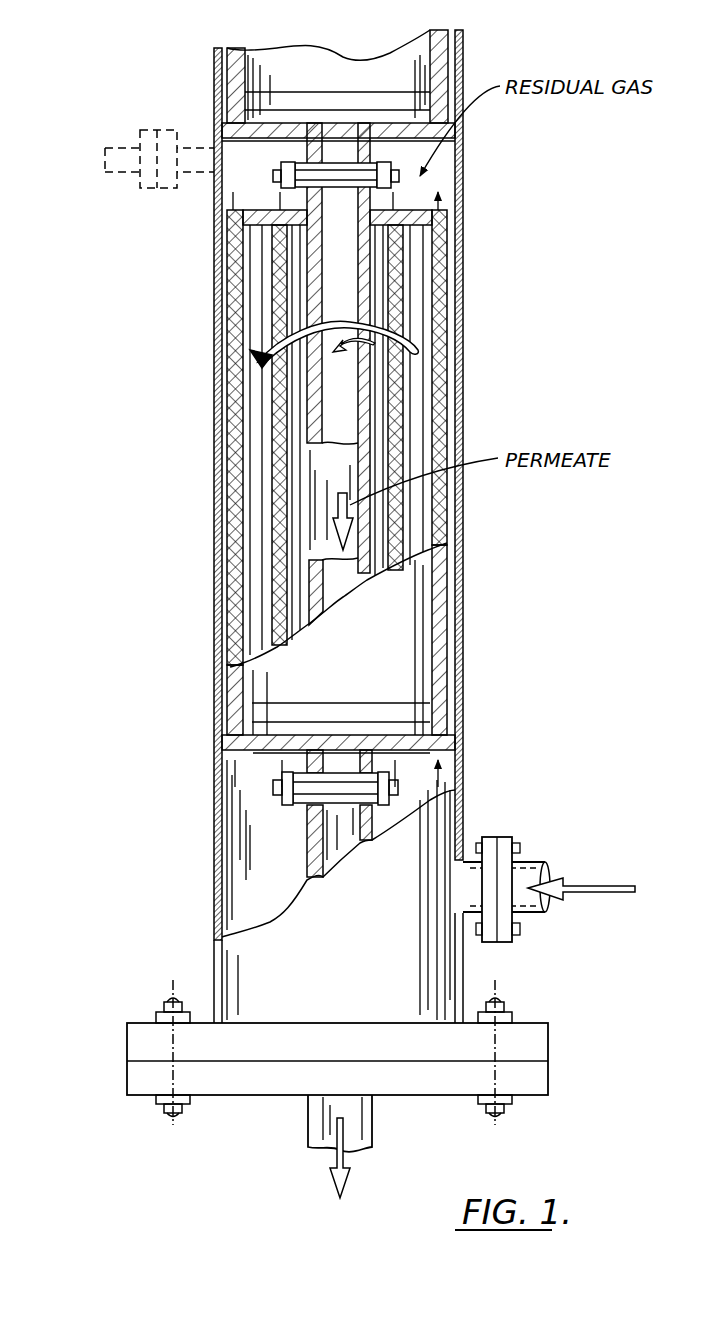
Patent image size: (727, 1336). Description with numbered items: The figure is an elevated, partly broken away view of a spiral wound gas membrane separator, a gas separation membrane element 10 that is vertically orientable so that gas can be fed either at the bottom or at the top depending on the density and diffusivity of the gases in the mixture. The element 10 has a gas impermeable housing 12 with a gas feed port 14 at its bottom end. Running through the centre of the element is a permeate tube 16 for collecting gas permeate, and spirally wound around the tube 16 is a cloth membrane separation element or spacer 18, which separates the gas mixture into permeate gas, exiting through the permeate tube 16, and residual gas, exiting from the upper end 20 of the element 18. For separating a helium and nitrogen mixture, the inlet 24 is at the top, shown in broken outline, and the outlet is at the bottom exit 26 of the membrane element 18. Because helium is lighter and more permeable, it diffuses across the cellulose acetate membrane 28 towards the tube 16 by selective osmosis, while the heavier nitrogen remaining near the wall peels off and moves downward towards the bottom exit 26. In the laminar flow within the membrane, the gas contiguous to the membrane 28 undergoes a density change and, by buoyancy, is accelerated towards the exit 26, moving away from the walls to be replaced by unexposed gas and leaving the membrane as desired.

The gas separation membrane element 10 is at (205, 417).
The gas impermeable housing 12 is at (463, 421).
The gas feed port 14 is at (548, 868).
The permeate tube 16 is at (333, 283).
The cloth membrane separation element 18 is at (440, 510).
The upper end 20 is at (437, 210).
The inlet 24 is at (103, 176).
The bottom exit 26 is at (272, 815).
The cellulose acetate membrane 28 is at (418, 210).